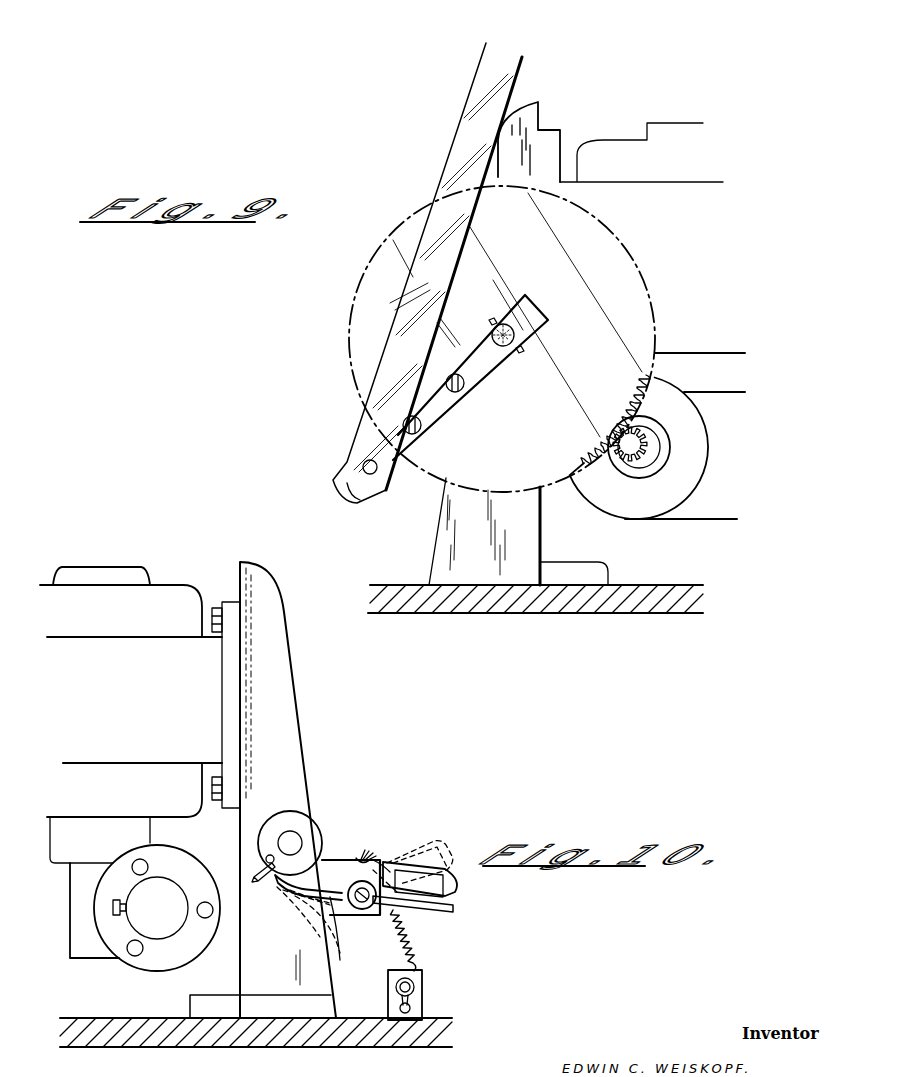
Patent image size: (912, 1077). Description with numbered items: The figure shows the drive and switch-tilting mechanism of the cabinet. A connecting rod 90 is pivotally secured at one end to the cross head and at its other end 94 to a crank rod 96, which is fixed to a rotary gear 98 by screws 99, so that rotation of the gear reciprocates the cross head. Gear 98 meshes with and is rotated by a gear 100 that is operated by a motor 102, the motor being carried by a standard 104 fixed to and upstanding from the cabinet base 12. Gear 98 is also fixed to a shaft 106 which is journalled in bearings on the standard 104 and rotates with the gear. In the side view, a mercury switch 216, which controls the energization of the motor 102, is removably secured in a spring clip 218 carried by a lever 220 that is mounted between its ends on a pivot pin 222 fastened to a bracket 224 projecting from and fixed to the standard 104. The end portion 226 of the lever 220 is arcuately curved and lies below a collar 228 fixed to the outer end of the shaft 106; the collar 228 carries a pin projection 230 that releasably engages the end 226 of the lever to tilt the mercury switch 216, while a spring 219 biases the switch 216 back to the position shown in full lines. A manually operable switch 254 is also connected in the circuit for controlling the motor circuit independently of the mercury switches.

In FIG. 9, the cabinet base 12 is at (633, 595).
In FIG. 10, the cabinet base 12 is at (212, 1037).
In FIG. 9, the connecting rod 90 is at (473, 117).
In FIG. 9, the other end of connecting rod 94 is at (363, 467).
In FIG. 9, the crank rod 96 is at (438, 412).
In FIG. 9, the rotary gear 98 is at (370, 302).
In FIG. 9, the screws 99 is at (403, 424).
In FIG. 9, the gear 100 is at (623, 458).
In FIG. 9, the motor 102 is at (630, 145).
In FIG. 10, the motor 102 is at (172, 600).
In FIG. 9, the standard 104 is at (452, 528).
In FIG. 10, the standard 104 is at (287, 713).
In FIG. 10, the shaft 106 is at (292, 842).
In FIG. 10, the mercury switch 216 is at (472, 890).
In FIG. 10, the spring clip 218 is at (437, 907).
In FIG. 10, the spring 219 is at (417, 955).
In FIG. 10, the lever 220 is at (325, 903).
In FIG. 10, the pivot pin 222 is at (362, 910).
In FIG. 10, the bracket 224 is at (323, 860).
In FIG. 10, the end portion of lever 226 is at (277, 880).
In FIG. 10, the collar 228 is at (295, 814).
In FIG. 10, the pin projection 230 is at (257, 870).
In FIG. 10, the manually operable switch 254 is at (413, 992).